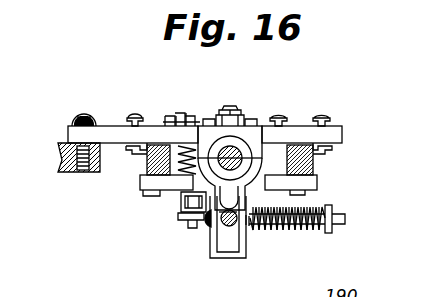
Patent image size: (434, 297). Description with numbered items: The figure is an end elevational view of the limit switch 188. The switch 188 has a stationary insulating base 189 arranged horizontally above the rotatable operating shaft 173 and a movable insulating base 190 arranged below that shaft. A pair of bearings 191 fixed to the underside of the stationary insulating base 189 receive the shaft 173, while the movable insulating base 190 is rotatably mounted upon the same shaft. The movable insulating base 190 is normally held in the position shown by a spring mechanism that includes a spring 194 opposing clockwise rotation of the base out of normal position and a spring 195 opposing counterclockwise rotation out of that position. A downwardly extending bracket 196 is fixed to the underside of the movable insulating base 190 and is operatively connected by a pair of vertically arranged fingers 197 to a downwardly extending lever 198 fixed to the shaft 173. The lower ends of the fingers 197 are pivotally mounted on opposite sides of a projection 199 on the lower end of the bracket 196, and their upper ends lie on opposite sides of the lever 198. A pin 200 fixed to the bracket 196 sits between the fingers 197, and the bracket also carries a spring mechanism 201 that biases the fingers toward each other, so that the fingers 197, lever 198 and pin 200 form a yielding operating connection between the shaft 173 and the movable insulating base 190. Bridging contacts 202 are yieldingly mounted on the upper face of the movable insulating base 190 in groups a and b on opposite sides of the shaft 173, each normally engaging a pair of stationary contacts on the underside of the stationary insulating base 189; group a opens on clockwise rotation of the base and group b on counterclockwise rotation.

The rotatable operating shaft 173 is at (232, 148).
The switch 188 is at (163, 108).
The stationary insulating base 189 is at (342, 134).
The movable insulating base 190 is at (317, 181).
The bearings 191 is at (230, 108).
The spring 194 is at (170, 172).
The spring 195 is at (178, 216).
The bracket 196 is at (222, 250).
The fingers 197 is at (222, 226).
The lever 198 is at (240, 204).
The projection 199 is at (232, 258).
The pin 200 is at (221, 220).
The spring mechanism 201 is at (299, 234).
The bridging contacts 202 is at (147, 156).